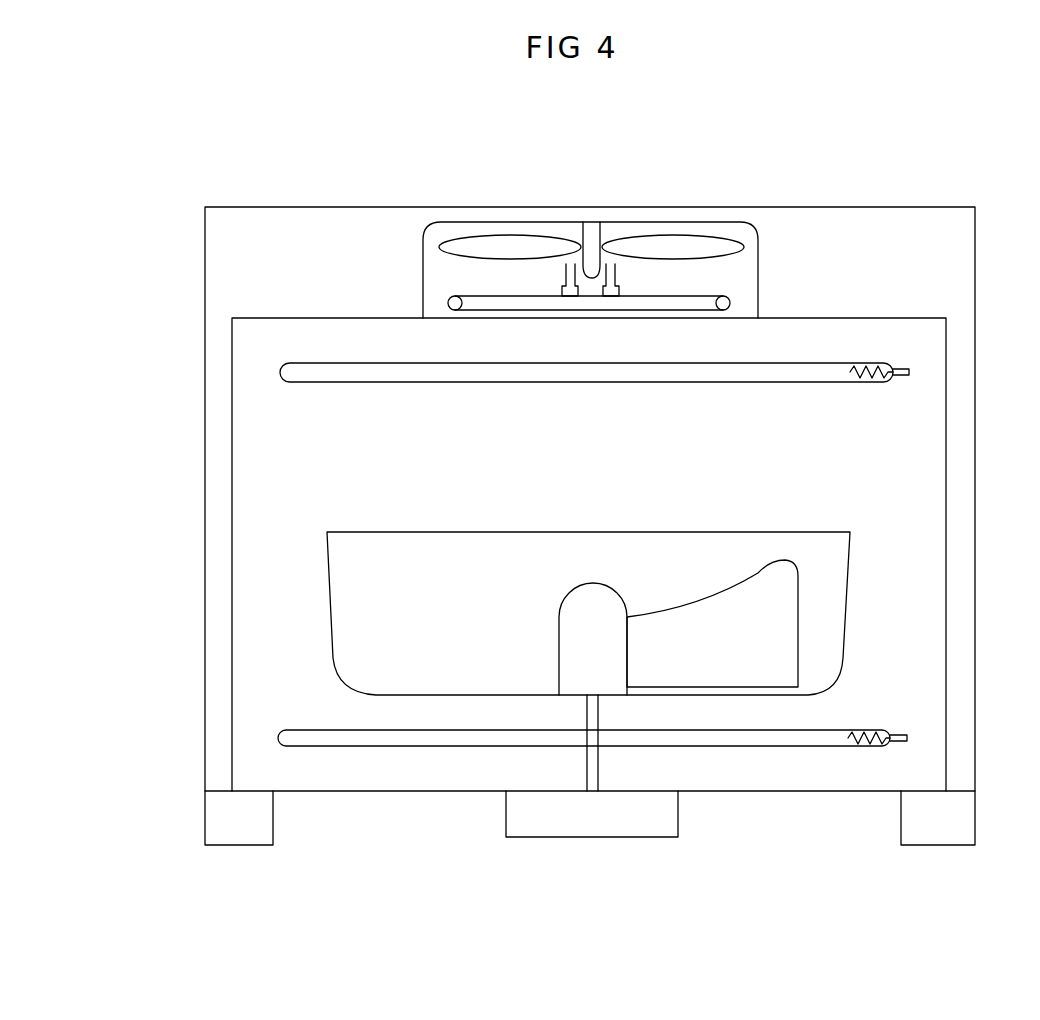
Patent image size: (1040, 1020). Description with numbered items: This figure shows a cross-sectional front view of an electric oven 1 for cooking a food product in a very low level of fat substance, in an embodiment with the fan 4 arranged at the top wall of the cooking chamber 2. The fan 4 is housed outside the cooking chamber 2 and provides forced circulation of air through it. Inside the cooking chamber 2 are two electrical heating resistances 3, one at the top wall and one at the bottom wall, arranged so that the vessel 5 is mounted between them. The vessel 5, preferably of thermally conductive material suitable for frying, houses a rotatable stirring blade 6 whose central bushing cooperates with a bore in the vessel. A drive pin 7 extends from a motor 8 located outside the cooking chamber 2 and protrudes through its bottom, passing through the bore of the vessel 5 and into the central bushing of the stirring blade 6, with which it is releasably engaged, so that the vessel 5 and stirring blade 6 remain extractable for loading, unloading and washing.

The oven 1 is at (175, 228).
The cooking chamber 2 is at (272, 464).
The electrical heating resistance 3 is at (378, 362).
The fan 4 is at (520, 238).
The vessel 5 is at (328, 620).
The stirring blade 6 is at (732, 653).
The drive pin 7 is at (580, 765).
The motor 8 is at (578, 843).